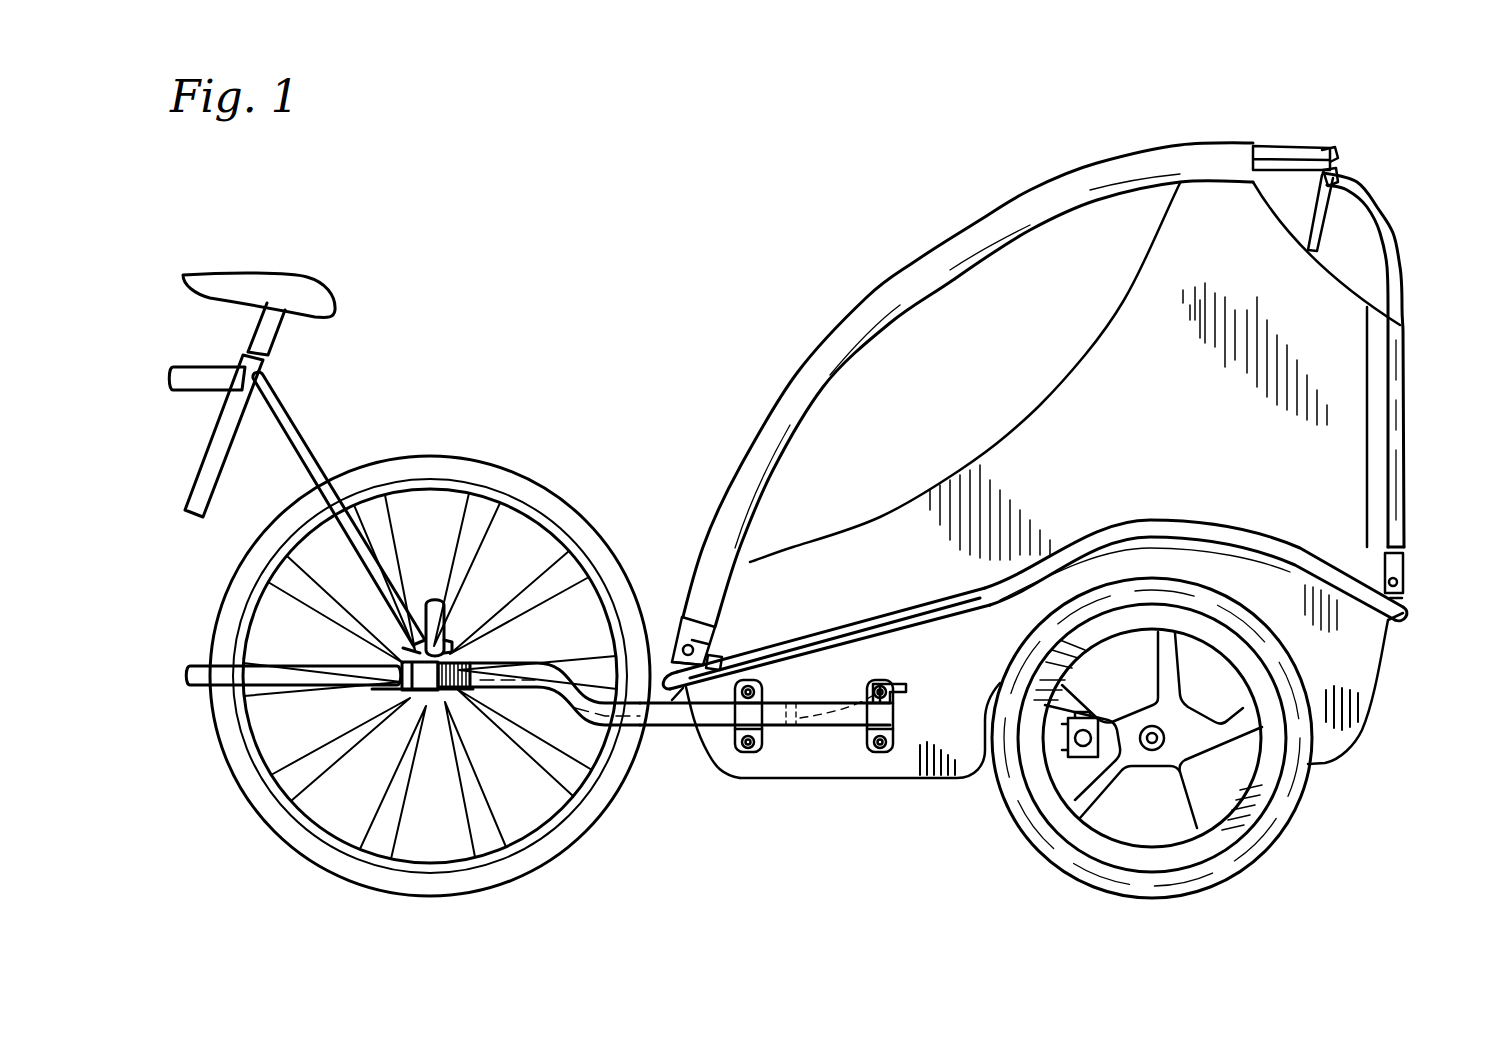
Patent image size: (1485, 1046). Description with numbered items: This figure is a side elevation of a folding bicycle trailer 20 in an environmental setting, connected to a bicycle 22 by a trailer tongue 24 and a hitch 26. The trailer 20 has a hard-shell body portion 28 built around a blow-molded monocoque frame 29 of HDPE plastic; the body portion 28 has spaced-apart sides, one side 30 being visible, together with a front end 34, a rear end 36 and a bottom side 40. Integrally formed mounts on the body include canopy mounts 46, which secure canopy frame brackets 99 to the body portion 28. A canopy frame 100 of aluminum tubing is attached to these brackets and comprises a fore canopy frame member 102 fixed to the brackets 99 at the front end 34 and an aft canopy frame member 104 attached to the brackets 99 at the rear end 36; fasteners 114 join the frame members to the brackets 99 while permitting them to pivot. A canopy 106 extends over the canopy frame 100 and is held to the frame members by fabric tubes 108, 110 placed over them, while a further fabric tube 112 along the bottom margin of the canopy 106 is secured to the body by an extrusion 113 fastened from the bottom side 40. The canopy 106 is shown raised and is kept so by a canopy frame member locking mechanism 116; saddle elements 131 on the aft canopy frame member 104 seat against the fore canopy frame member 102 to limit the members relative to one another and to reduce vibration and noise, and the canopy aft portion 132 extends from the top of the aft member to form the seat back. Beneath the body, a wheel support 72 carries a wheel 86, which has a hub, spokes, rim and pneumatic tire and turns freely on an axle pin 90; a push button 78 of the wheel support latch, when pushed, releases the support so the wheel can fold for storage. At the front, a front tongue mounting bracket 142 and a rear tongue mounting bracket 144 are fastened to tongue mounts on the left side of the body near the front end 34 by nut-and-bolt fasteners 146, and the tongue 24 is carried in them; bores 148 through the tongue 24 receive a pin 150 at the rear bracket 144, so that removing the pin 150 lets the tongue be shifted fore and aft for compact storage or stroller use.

The folding bicycle trailer 20 is at (748, 229).
The bicycle 22 is at (408, 352).
The trailer tongue 24 is at (660, 748).
The hitch 26 is at (380, 692).
The hard-shell body portion 28 is at (1415, 722).
The monocoque frame 29 is at (1335, 735).
The side 30 is at (962, 723).
The front end 34 is at (702, 735).
The rear end 36 is at (1383, 662).
The bottom side 40 is at (900, 782).
The canopy mount 46 is at (683, 662).
The wheel support 72 is at (1095, 722).
The push button 78 is at (1072, 738).
The wheel 86 is at (1065, 875).
The axle pin 90 is at (1145, 748).
The canopy frame bracket 99 is at (700, 655).
The canopy frame 100 is at (1303, 142).
The fore canopy frame member 102 is at (1270, 147).
The aft canopy frame member 104 is at (1395, 215).
The canopy 106 is at (1168, 452).
The fabric tube 108 is at (892, 298).
The fabric tube 110 is at (1390, 410).
The fabric tube 112 is at (888, 618).
The extrusion 113 is at (720, 656).
The fastener 114 is at (690, 620).
The canopy frame member locking mechanism 116 is at (1390, 135).
The saddle element 131 is at (1318, 178).
The canopy aft portion 132 is at (1330, 222).
The front tongue mounting bracket 142 is at (740, 712).
The rear tongue mounting bracket 144 is at (873, 712).
The nut-and-bolt fastener 146 is at (748, 750).
The bore 148 is at (840, 690).
The pin 150 is at (895, 682).